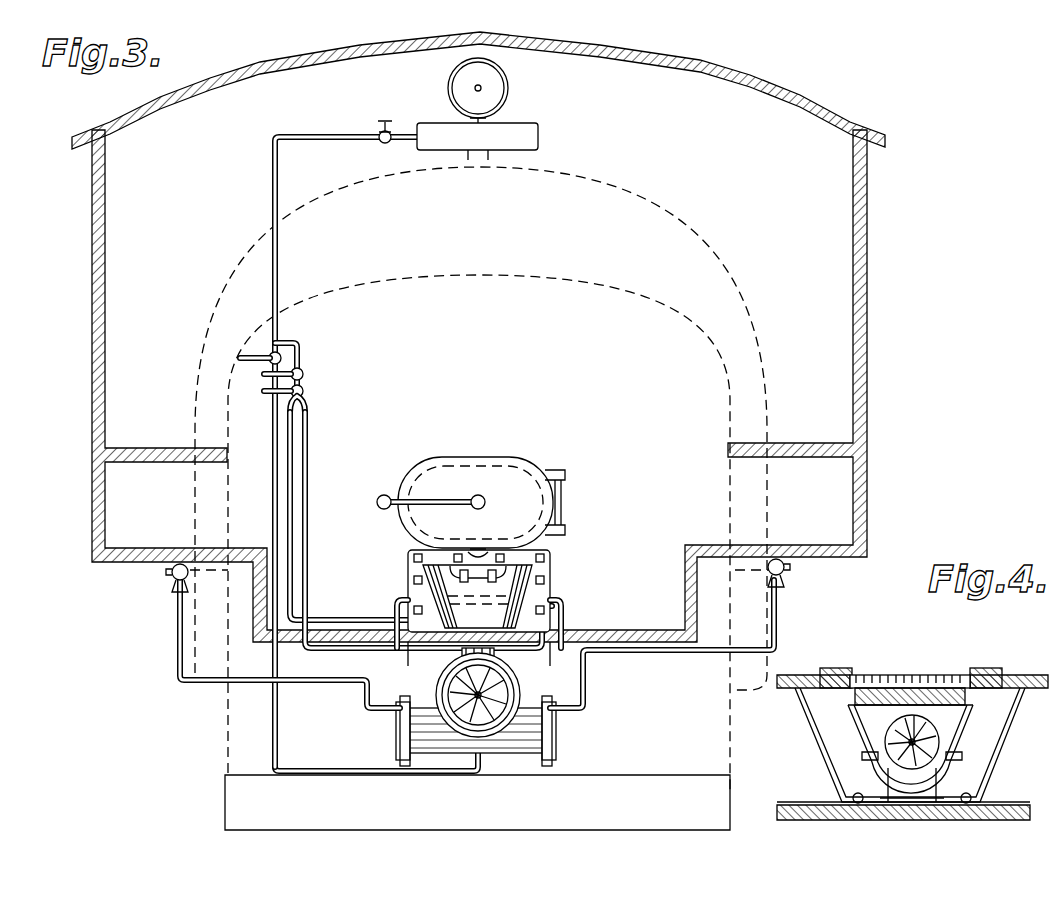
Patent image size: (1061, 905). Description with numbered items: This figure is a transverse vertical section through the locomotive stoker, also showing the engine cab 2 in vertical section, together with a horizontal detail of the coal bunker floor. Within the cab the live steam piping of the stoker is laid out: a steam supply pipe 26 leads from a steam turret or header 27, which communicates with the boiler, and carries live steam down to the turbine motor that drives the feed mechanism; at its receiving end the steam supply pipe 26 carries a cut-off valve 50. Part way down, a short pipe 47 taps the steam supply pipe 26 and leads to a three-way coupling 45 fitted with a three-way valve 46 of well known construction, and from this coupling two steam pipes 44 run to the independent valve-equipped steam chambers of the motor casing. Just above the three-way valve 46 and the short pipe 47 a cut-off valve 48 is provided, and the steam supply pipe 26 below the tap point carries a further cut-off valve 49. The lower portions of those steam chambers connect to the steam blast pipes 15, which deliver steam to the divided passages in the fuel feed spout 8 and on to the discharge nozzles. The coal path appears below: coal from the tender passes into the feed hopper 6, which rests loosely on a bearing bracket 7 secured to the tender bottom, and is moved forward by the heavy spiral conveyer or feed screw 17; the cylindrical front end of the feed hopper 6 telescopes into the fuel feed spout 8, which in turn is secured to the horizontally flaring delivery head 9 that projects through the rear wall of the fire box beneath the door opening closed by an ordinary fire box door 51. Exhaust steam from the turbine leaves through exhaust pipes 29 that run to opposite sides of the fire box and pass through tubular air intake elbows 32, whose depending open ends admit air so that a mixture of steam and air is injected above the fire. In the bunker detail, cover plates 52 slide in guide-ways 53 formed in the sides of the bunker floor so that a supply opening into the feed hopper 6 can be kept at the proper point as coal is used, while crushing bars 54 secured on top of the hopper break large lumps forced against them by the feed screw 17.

In FIG. 3, the engine cab 2 is at (868, 326).
In FIG. 4, the feed hopper 6 is at (945, 730).
In FIG. 4, the bearing bracket 7 is at (888, 778).
In FIG. 3, the fuel feed spout 8 is at (450, 665).
In FIG. 3, the delivery head 9 is at (520, 592).
In FIG. 3, the steam blast pipes 15 is at (396, 610).
In FIG. 3, the spiral conveyer or feed screw 17 is at (500, 689).
In FIG. 4, the spiral conveyer or feed screw 17 is at (888, 740).
In FIG. 3, the steam supply pipe 26 is at (279, 184).
In FIG. 3, the steam turret or header 27 is at (524, 130).
In FIG. 3, the exhaust pipes 29 is at (364, 702).
In FIG. 3, the tubular air intake elbows 32 is at (172, 576).
In FIG. 3, the steam pipes 44 is at (292, 510).
In FIG. 3, the three-way coupling 45 is at (308, 403).
In FIG. 3, the three-way valve 46 is at (305, 387).
In FIG. 3, the short pipe 47 is at (300, 343).
In FIG. 3, the cut-off valve 48 is at (304, 370).
In FIG. 3, the cut-off valve 49 is at (264, 352).
In FIG. 3, the cut-off valve 50 is at (384, 126).
In FIG. 3, the fire box door 51 is at (502, 472).
In FIG. 4, the cover plates 52 is at (896, 676).
In FIG. 4, the guide-ways 53 is at (846, 672).
In FIG. 4, the crushing bars 54 is at (912, 700).